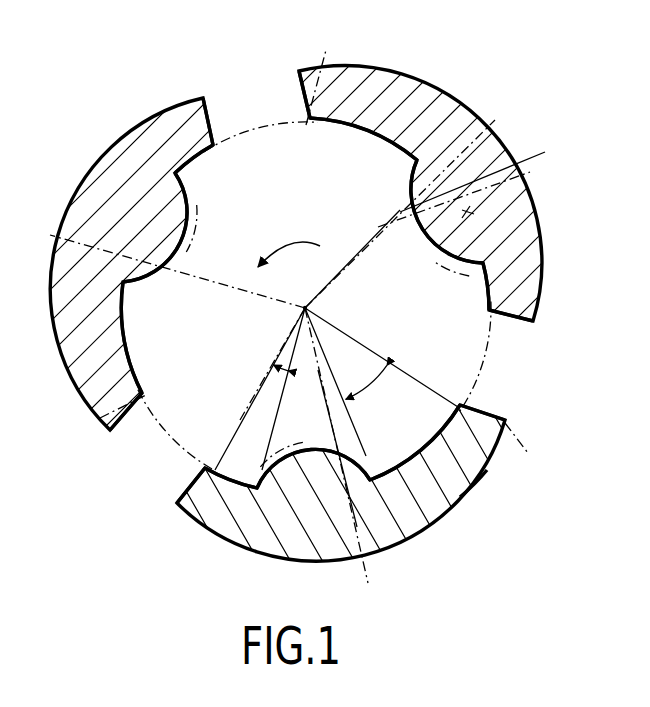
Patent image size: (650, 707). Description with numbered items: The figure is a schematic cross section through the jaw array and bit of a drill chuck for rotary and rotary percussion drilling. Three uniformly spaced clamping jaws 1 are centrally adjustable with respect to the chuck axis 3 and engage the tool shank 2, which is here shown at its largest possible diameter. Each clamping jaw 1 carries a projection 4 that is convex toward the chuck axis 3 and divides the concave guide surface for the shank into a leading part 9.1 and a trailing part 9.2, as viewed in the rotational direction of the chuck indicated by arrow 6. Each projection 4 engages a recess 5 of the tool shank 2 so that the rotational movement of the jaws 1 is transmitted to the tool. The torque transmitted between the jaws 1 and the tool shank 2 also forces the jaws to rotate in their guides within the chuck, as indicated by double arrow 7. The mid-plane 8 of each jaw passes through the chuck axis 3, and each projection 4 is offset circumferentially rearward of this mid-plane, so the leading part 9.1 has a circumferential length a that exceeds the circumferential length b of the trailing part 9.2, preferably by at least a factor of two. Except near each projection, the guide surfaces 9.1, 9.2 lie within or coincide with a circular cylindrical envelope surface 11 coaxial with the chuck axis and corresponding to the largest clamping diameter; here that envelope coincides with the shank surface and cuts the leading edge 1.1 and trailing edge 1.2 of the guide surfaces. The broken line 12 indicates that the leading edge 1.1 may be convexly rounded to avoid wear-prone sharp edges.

The clamping jaw 1 is at (56, 296).
The leading edge 1.1 is at (307, 123).
The trailing edge 1.2 is at (492, 322).
The tool shank 2 is at (484, 362).
The chuck axis 3 is at (304, 309).
The projection 4 is at (140, 272).
The recess 5 is at (200, 207).
The arrow 6 is at (295, 244).
The double arrow 7 is at (453, 500).
The mid-plane 8 is at (493, 123).
The leading part 9.1 is at (373, 140).
The trailing part 9.2 is at (205, 150).
The circular cylindrical envelope surface 11 is at (120, 463).
The broken line 12 is at (318, 98).
The circumferential length of leading part a is at (372, 387).
The circumferential length of trailing part b is at (278, 374).